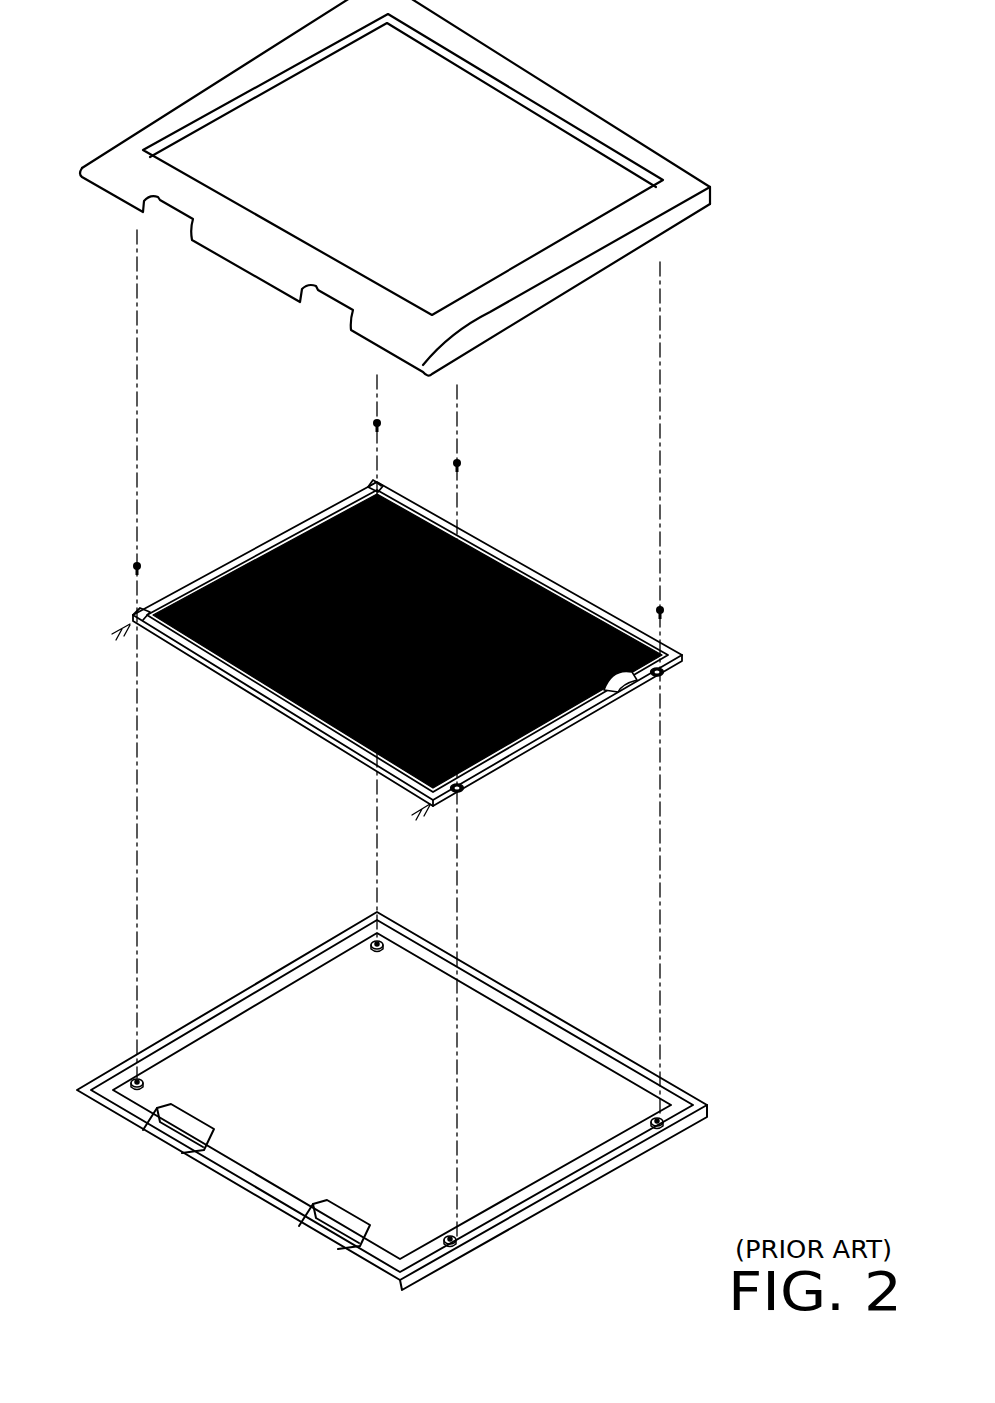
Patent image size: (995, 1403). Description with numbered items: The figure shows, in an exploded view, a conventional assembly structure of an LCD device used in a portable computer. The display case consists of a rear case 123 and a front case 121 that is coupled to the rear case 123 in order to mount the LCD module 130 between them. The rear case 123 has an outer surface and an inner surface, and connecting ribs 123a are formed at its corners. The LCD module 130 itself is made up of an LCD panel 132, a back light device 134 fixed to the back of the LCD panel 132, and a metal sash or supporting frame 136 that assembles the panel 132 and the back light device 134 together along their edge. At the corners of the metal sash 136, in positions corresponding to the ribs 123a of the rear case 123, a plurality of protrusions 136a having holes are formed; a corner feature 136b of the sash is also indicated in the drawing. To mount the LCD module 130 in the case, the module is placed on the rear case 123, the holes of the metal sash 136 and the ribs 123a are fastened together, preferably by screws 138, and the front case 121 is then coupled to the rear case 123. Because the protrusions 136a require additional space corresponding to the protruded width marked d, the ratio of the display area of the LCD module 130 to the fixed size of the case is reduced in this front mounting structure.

The front case 121 is at (680, 187).
The rear case 123 is at (700, 1118).
The connecting rib 123a is at (344, 934).
The LCD module 130 is at (454, 637).
The LCD panel 132 is at (526, 566).
The back light device 134 is at (630, 686).
The metal sash 136 is at (266, 546).
The protrusion 136a is at (461, 794).
The corner notch of guide frame 136b is at (372, 480).
The screw 138 is at (131, 571).